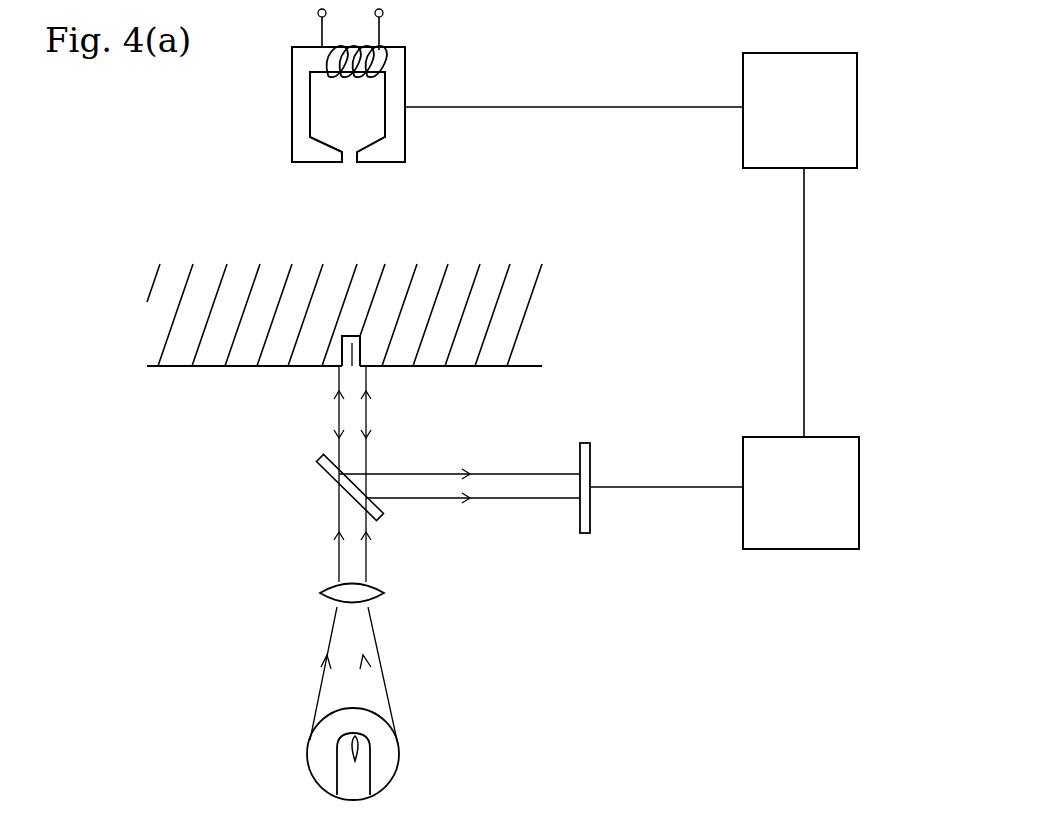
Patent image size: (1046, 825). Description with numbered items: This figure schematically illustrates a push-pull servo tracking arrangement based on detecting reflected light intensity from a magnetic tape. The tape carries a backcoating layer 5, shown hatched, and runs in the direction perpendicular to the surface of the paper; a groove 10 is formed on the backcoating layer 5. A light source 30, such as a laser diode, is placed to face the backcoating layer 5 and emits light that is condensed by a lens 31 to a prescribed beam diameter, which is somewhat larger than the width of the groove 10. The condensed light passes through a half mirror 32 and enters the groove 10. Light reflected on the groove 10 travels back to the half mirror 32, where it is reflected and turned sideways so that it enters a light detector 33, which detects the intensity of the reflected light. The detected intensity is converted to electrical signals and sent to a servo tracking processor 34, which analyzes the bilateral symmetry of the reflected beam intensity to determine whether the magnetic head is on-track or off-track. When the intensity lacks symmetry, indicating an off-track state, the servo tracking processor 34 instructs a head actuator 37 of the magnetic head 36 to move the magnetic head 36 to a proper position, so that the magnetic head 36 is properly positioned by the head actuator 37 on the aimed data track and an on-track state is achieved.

The backcoating layer 5 is at (512, 309).
The groove 10 is at (340, 384).
The light source 30 is at (400, 752).
The lens 31 is at (385, 590).
The half mirror 32 is at (325, 473).
The light detector 33 is at (588, 462).
The servo tracking processor 34 is at (843, 480).
The magnetic head 36 is at (408, 72).
The head actuator 37 is at (838, 113).